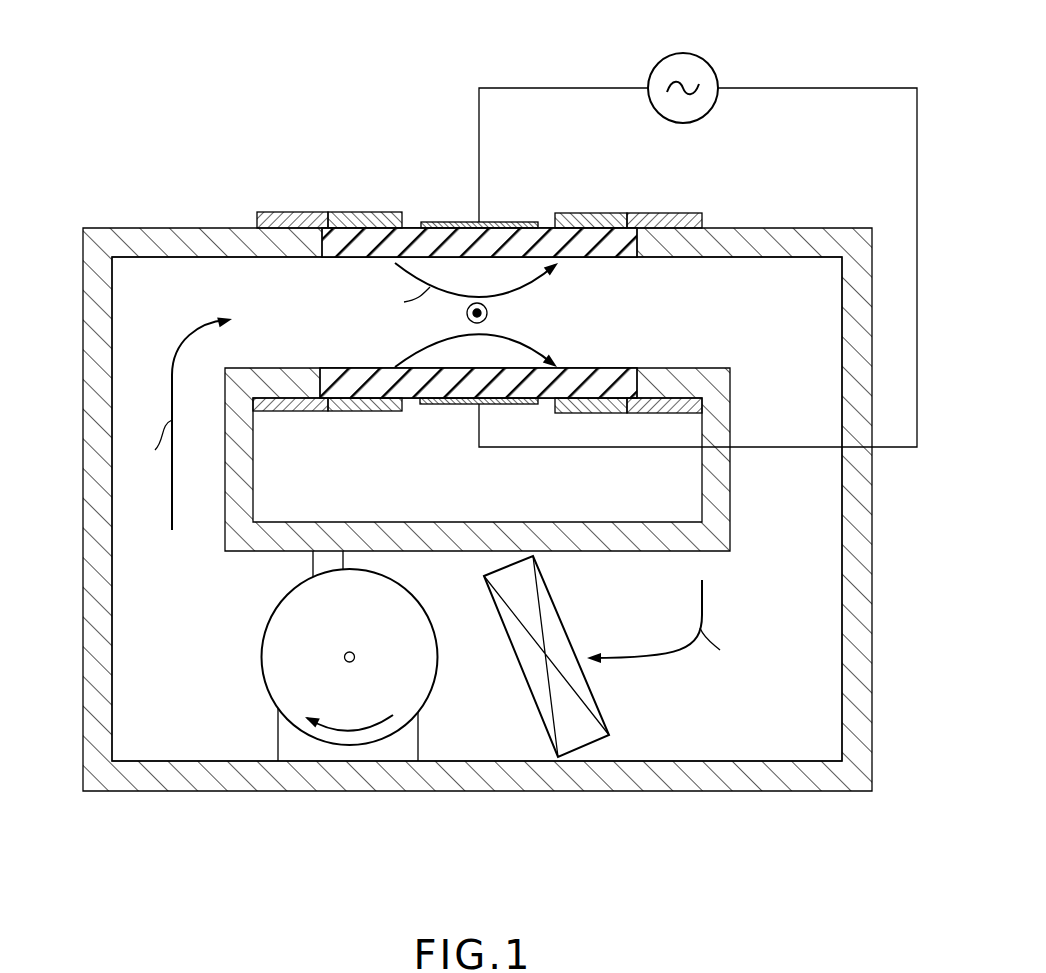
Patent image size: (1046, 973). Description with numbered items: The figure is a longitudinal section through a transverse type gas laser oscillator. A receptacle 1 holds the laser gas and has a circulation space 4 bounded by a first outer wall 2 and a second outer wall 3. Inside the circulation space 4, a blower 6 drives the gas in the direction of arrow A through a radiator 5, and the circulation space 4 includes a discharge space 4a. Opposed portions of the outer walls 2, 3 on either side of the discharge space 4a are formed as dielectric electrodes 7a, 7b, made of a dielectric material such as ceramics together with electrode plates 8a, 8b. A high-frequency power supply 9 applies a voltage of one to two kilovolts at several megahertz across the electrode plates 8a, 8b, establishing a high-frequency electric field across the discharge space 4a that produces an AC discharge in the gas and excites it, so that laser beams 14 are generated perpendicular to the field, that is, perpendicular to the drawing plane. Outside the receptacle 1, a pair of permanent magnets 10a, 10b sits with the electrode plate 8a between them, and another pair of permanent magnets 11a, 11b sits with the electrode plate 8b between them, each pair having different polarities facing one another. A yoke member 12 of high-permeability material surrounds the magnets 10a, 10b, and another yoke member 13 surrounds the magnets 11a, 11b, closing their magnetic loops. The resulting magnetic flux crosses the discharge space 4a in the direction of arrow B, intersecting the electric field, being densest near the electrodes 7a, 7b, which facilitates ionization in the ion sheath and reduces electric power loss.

The receptacle 1 is at (211, 215).
The first outer wall 2 is at (470, 792).
The second outer wall 3 is at (583, 523).
The circulation space 4 is at (207, 740).
The discharge space 4a is at (530, 325).
The radiator 5 is at (593, 693).
The blower 6 is at (437, 662).
The dielectric electrode 7a is at (355, 258).
The dielectric electrode 7b is at (620, 368).
The electrode plate 8a is at (508, 222).
The electrode plate 8b is at (448, 408).
The high-frequency power supply 9 is at (705, 60).
The permanent magnet 10a is at (381, 212).
The permanent magnet 10b is at (682, 213).
The permanent magnet 11a is at (358, 412).
The permanent magnet 11b is at (585, 417).
The yoke member 12 is at (297, 212).
The yoke member 13 is at (290, 412).
The laser beams 14 is at (488, 308).